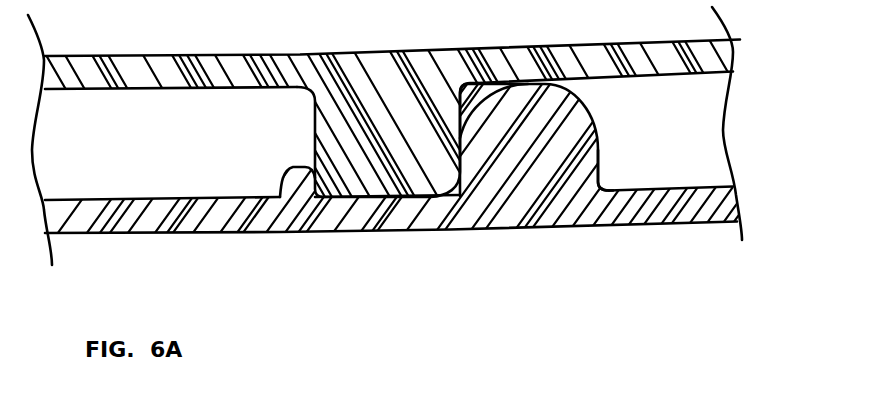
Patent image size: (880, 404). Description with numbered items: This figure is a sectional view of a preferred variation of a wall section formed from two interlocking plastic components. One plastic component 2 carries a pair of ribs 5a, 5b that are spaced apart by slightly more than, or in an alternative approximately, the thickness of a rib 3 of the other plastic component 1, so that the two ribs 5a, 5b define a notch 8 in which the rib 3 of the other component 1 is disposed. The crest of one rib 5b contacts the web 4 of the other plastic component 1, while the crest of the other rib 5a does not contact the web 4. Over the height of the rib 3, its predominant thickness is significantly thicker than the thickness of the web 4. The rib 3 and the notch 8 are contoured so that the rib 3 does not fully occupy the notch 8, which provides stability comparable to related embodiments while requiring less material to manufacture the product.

The other plastic component 1 is at (735, 55).
The one plastic component 2 is at (742, 197).
The rib 3 is at (350, 173).
The web 4 is at (195, 88).
The rib 5a is at (295, 167).
The rib 5b is at (600, 167).
The notch 8 is at (428, 203).